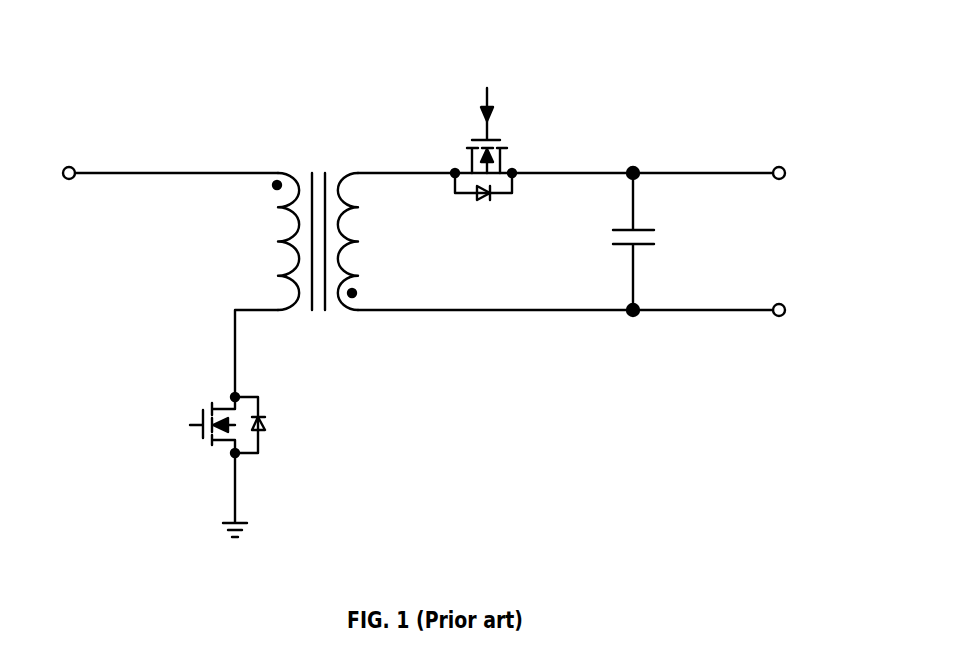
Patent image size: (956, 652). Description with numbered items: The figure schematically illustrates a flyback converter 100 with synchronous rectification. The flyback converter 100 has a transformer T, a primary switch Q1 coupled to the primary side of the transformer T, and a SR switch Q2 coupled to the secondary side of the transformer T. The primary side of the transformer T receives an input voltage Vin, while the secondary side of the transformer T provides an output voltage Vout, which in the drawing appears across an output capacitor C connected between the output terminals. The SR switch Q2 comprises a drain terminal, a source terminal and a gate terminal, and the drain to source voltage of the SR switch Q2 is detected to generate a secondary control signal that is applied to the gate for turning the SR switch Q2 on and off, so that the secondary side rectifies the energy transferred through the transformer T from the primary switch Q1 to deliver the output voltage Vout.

The flyback converter 100 is at (438, 271).
The primary switch Q1 is at (206, 425).
The SR switch Q2 is at (486, 156).
The transformer T is at (315, 220).
The output capacitor C is at (633, 241).
The input voltage Vin is at (62, 342).
The output voltage Vout is at (802, 241).